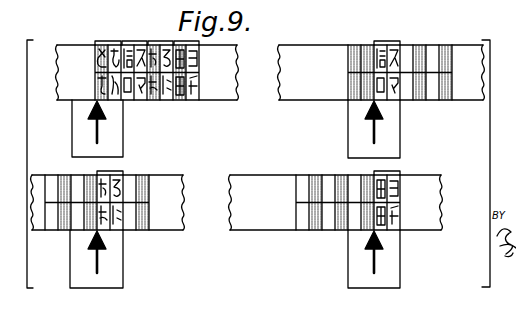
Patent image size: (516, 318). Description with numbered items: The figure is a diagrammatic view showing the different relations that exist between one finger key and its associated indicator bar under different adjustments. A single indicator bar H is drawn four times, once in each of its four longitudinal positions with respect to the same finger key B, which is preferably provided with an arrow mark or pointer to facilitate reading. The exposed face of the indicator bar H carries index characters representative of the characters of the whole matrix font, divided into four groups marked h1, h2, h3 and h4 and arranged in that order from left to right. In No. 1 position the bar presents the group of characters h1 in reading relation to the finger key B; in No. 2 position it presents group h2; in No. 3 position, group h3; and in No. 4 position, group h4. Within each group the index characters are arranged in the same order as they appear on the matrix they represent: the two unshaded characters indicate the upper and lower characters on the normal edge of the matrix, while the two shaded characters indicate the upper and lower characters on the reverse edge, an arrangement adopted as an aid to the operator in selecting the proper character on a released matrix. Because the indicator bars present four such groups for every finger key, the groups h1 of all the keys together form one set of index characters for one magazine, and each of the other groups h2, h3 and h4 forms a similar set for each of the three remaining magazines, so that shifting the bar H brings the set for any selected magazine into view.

The indicator bar H is at (282, 89).
The finger key B is at (72, 128).
The first group of index characters h1 is at (110, 41).
The second group of index characters h2 is at (388, 28).
The third group of index characters h3 is at (115, 170).
The fourth group of index characters h4 is at (408, 159).
The No. 1 position 1 is at (147, 89).
The No. 2 position 2 is at (400, 87).
The No. 3 position 3 is at (97, 220).
The No. 4 position 4 is at (363, 218).